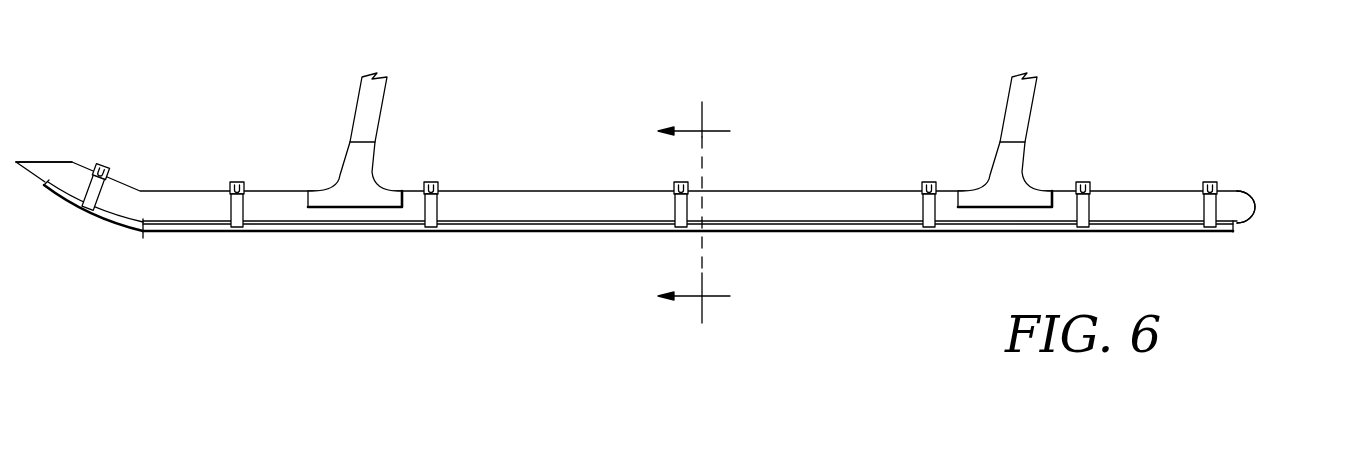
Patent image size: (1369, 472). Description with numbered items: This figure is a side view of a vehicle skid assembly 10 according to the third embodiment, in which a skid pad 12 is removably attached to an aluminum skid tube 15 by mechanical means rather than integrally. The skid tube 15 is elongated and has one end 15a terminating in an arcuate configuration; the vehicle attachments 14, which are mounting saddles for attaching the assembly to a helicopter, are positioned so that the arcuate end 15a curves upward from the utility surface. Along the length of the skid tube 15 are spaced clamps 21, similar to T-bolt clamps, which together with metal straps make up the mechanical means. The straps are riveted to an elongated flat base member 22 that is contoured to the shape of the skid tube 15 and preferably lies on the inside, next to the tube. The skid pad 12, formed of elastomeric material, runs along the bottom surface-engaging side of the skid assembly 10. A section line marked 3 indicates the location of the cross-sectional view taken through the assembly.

The vehicle skid assembly 10 is at (687, 181).
The skid pad 12 is at (302, 228).
The vehicle attachments 14 is at (368, 160).
The skid tube 15 is at (1250, 188).
The arcuate end 15a is at (38, 158).
The clamps 21 is at (108, 181).
The base member 22 is at (142, 227).
The section line 3- 3 is at (694, 215).